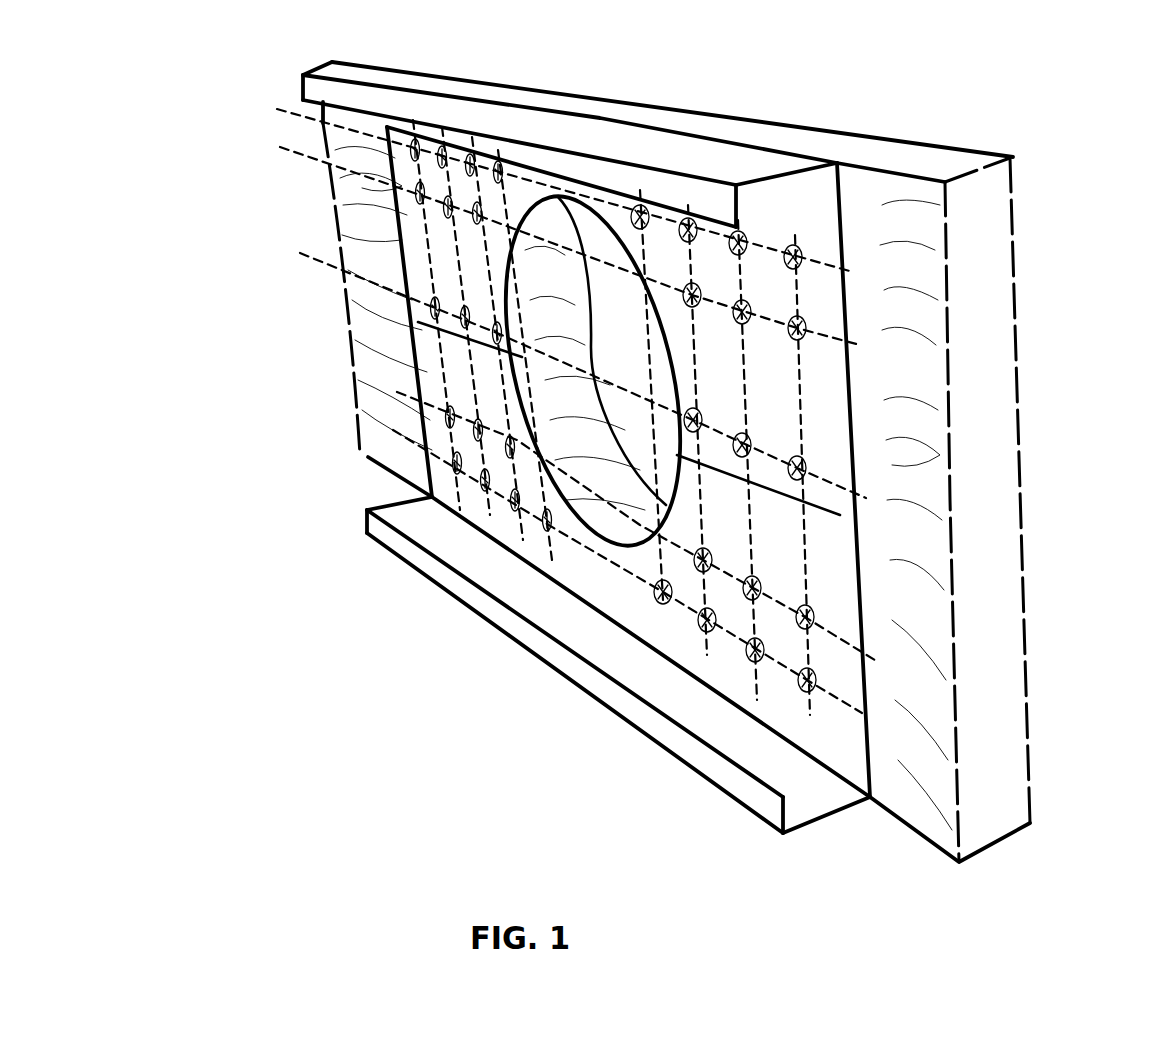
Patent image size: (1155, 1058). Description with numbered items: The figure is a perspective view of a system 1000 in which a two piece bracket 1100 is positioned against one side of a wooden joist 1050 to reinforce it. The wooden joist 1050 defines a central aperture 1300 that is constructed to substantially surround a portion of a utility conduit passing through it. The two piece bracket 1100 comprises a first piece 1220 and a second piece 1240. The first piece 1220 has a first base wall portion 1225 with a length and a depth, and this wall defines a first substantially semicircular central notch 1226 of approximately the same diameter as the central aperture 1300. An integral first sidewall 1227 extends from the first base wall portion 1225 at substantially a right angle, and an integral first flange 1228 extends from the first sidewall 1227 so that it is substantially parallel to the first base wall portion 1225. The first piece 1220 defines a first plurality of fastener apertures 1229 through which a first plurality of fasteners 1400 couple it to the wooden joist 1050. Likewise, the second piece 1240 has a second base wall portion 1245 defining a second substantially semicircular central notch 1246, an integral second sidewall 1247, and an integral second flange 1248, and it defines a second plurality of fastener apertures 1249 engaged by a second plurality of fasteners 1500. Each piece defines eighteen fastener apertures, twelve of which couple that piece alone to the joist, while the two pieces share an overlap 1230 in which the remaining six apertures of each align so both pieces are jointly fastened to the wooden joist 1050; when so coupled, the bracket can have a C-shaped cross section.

The system 1000 is at (217, 60).
The wooden joist 1050 is at (313, 155).
The two piece bracket 1100 is at (680, 487).
The first piece 1220 is at (812, 210).
The first base wall portion 1225 is at (812, 292).
The first substantially semicircular central notch 1226 is at (515, 278).
The first sidewall 1227 is at (720, 160).
The first flange 1228 is at (633, 173).
The first plurality of fastener apertures 1229 is at (810, 328).
The overlap 1230 is at (822, 507).
The second piece 1240 is at (830, 553).
The second base wall portion 1245 is at (832, 592).
The second substantially semicircular central notch 1246 is at (517, 400).
The second sidewall 1247 is at (813, 802).
The second flange 1248 is at (675, 737).
The second plurality of fastener apertures 1249 is at (815, 618).
The central aperture 1300 is at (620, 358).
The first plurality of fasteners 1400 is at (807, 470).
The second plurality of fasteners 1500 is at (820, 688).